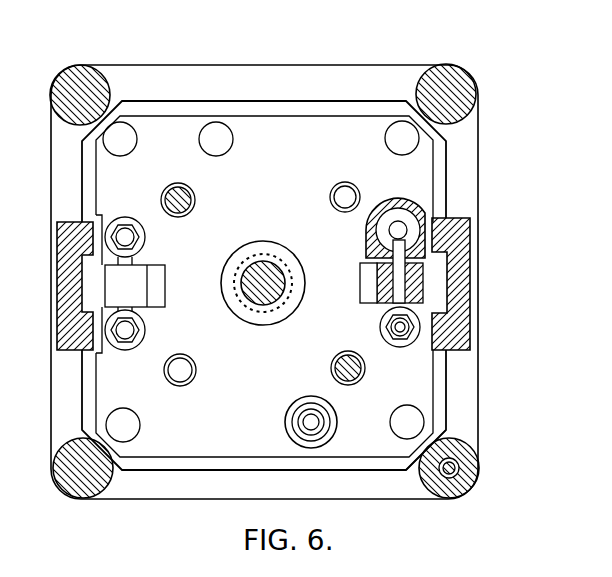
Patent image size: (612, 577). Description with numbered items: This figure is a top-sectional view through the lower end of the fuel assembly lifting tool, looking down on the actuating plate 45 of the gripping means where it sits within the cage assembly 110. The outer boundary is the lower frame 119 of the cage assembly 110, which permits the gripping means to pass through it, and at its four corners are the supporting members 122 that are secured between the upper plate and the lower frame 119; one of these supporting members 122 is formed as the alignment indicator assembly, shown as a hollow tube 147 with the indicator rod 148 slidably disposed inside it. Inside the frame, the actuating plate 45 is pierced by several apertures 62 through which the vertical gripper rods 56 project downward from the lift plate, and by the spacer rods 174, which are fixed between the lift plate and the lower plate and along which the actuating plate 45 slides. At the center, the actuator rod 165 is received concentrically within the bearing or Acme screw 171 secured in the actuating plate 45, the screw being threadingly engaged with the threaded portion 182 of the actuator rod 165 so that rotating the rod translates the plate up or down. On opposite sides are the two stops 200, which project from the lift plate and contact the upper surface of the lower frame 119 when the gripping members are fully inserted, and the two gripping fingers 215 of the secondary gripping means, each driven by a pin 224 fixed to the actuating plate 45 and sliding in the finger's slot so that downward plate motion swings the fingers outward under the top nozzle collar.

The lower frame 119 is at (272, 78).
The supporting members 122 is at (96, 90).
The hollow tube 147 is at (433, 477).
The actuating plate 45 is at (162, 113).
The indicator rod 148 is at (421, 452).
The vertical rod 56 is at (201, 138).
The spacer rods 174 is at (352, 190).
The stops 200 is at (68, 256).
The gripping fingers 215 is at (130, 282).
The bearing or Acme screw 171 is at (278, 250).
The actuator rod 165 is at (251, 262).
The threaded portion 182 is at (286, 293).
The pin 224 is at (378, 257).
The cage assembly 110 is at (510, 240).
The aperture 62 is at (287, 415).